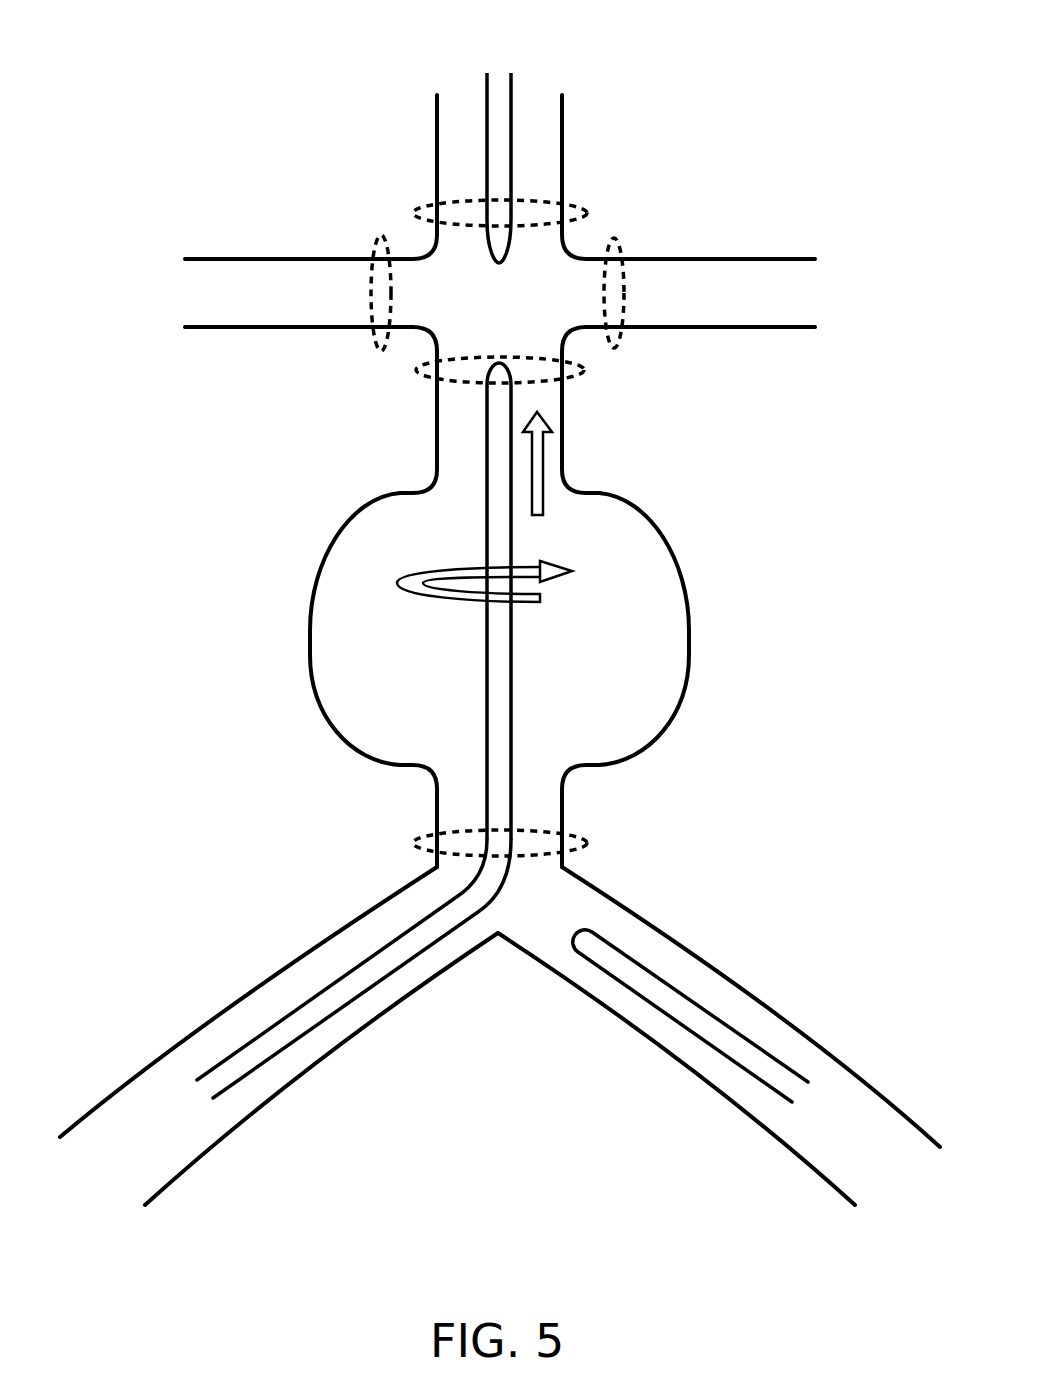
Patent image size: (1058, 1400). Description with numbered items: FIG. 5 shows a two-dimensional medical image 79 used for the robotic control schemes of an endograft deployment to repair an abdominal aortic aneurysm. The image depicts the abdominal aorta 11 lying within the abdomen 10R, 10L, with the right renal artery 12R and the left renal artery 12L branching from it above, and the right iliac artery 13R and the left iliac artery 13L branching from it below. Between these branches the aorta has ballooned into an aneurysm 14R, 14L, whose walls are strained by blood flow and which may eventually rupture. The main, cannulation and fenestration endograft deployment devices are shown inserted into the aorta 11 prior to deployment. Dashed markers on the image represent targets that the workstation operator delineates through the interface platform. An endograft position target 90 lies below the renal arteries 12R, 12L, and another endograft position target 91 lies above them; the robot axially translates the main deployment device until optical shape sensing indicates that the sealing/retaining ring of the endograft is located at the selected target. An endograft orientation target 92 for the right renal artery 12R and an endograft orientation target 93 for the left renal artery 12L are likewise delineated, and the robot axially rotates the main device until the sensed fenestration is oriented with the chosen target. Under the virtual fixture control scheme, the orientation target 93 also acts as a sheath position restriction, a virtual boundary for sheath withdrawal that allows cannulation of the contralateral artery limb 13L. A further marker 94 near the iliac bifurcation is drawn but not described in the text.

The two-dimensional medical image 79 is at (137, 102).
The abdominal aorta 11 is at (437, 123).
The right renal artery 12R is at (235, 305).
The left renal artery 12L is at (810, 305).
The abdomen right side 10R is at (268, 483).
The abdomen left side 10L is at (787, 485).
The aneurysm right portion 14R is at (402, 645).
The aneurysm left portion 14L is at (642, 645).
The right iliac artery 13R is at (167, 1148).
The left iliac artery 13L is at (880, 1152).
The endograft position target 90 is at (418, 367).
The endograft position target 91 is at (585, 212).
The endograft orientation target 92 is at (383, 235).
The endograft orientation target 93 is at (612, 345).
The distal section plane 94 is at (585, 843).